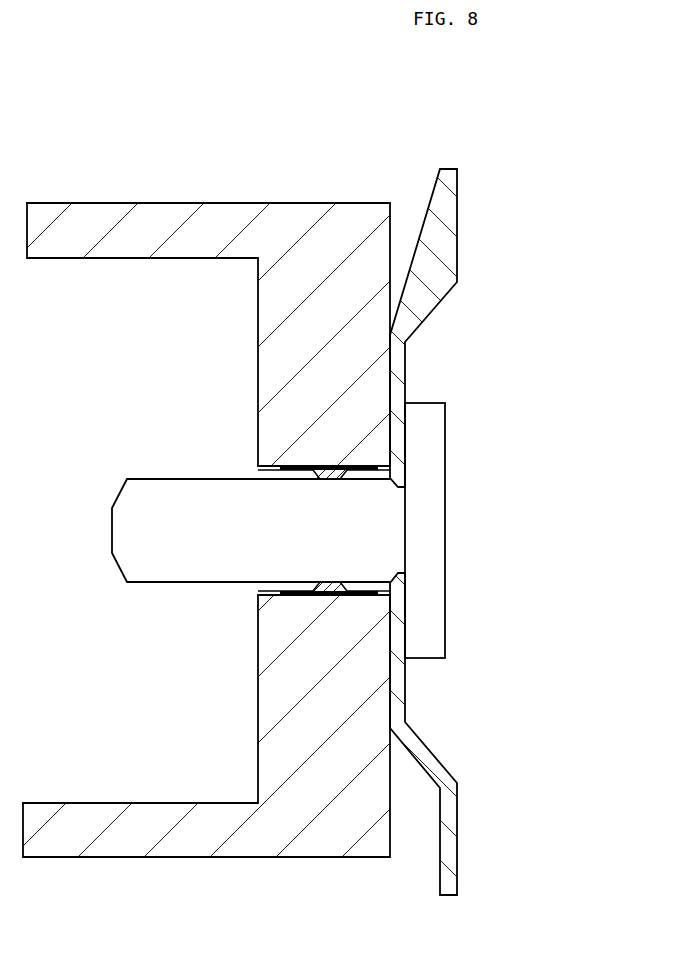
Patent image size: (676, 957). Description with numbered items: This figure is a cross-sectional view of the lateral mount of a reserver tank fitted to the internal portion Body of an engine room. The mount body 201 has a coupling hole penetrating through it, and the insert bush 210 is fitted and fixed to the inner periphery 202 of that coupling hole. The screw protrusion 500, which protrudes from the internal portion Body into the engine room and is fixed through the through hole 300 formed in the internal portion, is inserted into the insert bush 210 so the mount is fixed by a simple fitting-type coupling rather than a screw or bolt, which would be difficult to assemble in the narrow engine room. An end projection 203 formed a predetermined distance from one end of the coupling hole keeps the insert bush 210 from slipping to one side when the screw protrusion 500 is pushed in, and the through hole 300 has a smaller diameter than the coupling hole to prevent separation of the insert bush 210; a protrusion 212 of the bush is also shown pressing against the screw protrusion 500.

The mount body 201 is at (183, 203).
The inner periphery 202 is at (327, 465).
The end projection 203 is at (278, 467).
The insert bush 210 is at (287, 612).
The protrusion 212 is at (330, 580).
The through hole 300 is at (406, 490).
The screw protrusion 500 is at (427, 530).
The internal portion of engine room Body is at (457, 205).